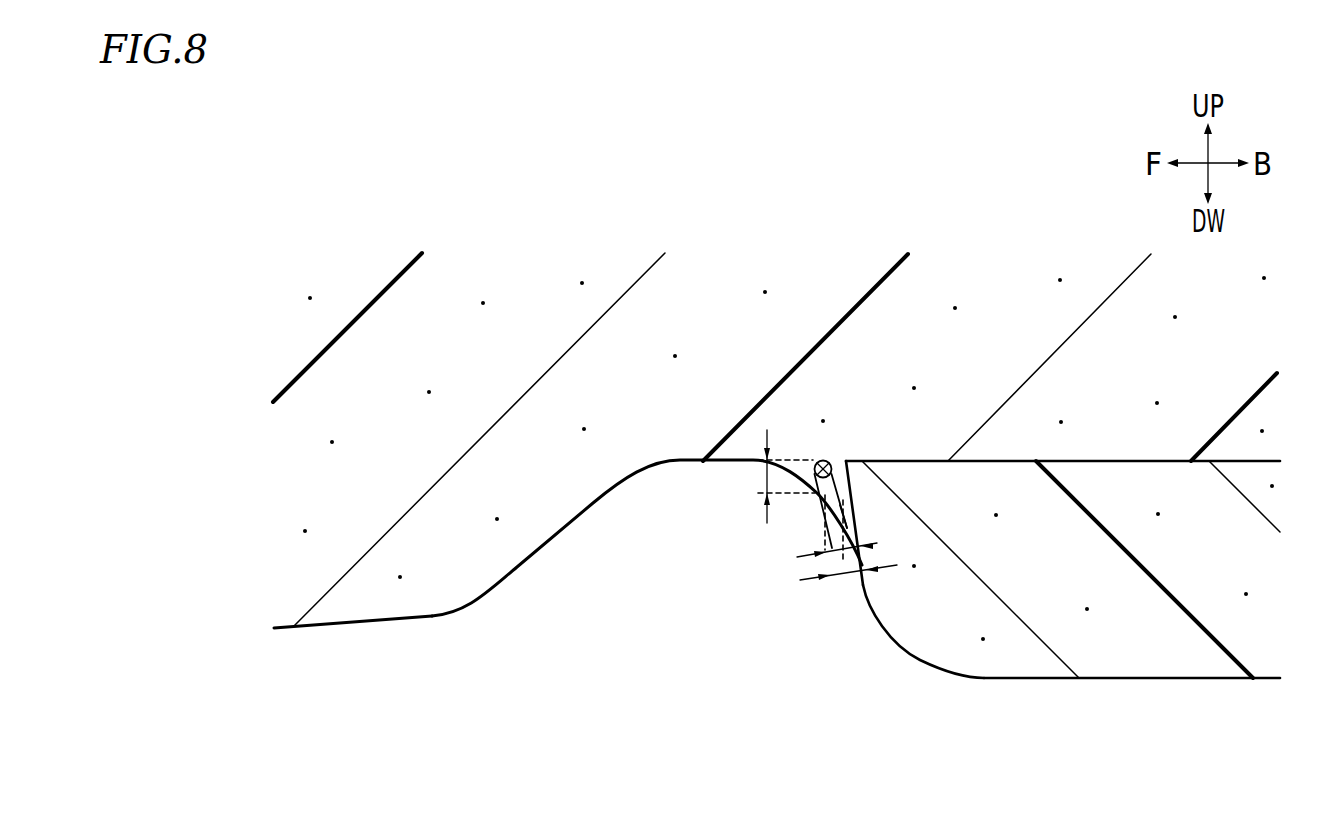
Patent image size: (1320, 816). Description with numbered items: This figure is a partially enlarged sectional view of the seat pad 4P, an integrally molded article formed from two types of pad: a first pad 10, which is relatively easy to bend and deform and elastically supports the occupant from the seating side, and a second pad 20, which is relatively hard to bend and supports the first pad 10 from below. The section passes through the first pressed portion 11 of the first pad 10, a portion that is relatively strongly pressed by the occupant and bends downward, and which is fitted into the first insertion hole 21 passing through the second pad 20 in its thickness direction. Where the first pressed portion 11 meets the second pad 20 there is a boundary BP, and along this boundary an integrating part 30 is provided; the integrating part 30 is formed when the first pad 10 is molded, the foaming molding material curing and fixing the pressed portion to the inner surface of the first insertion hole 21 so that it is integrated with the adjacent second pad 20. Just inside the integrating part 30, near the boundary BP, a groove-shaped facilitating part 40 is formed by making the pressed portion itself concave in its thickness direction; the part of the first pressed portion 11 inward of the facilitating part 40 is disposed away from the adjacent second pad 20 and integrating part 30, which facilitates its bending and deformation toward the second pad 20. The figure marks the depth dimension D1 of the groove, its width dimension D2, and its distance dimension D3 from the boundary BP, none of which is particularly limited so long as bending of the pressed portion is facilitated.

The first pad 10 is at (775, 476).
The first pressed portion 11 is at (460, 575).
The seat pad 4P is at (345, 642).
The second pad 20 is at (1044, 608).
The first insertion hole 21 is at (863, 582).
The boundary BP is at (862, 612).
The facilitating part 40 is at (827, 459).
The integrating part 30 is at (852, 528).
The depth dimension D1 is at (765, 480).
The width dimension D2 is at (828, 554).
The distance dimension D3 is at (848, 578).